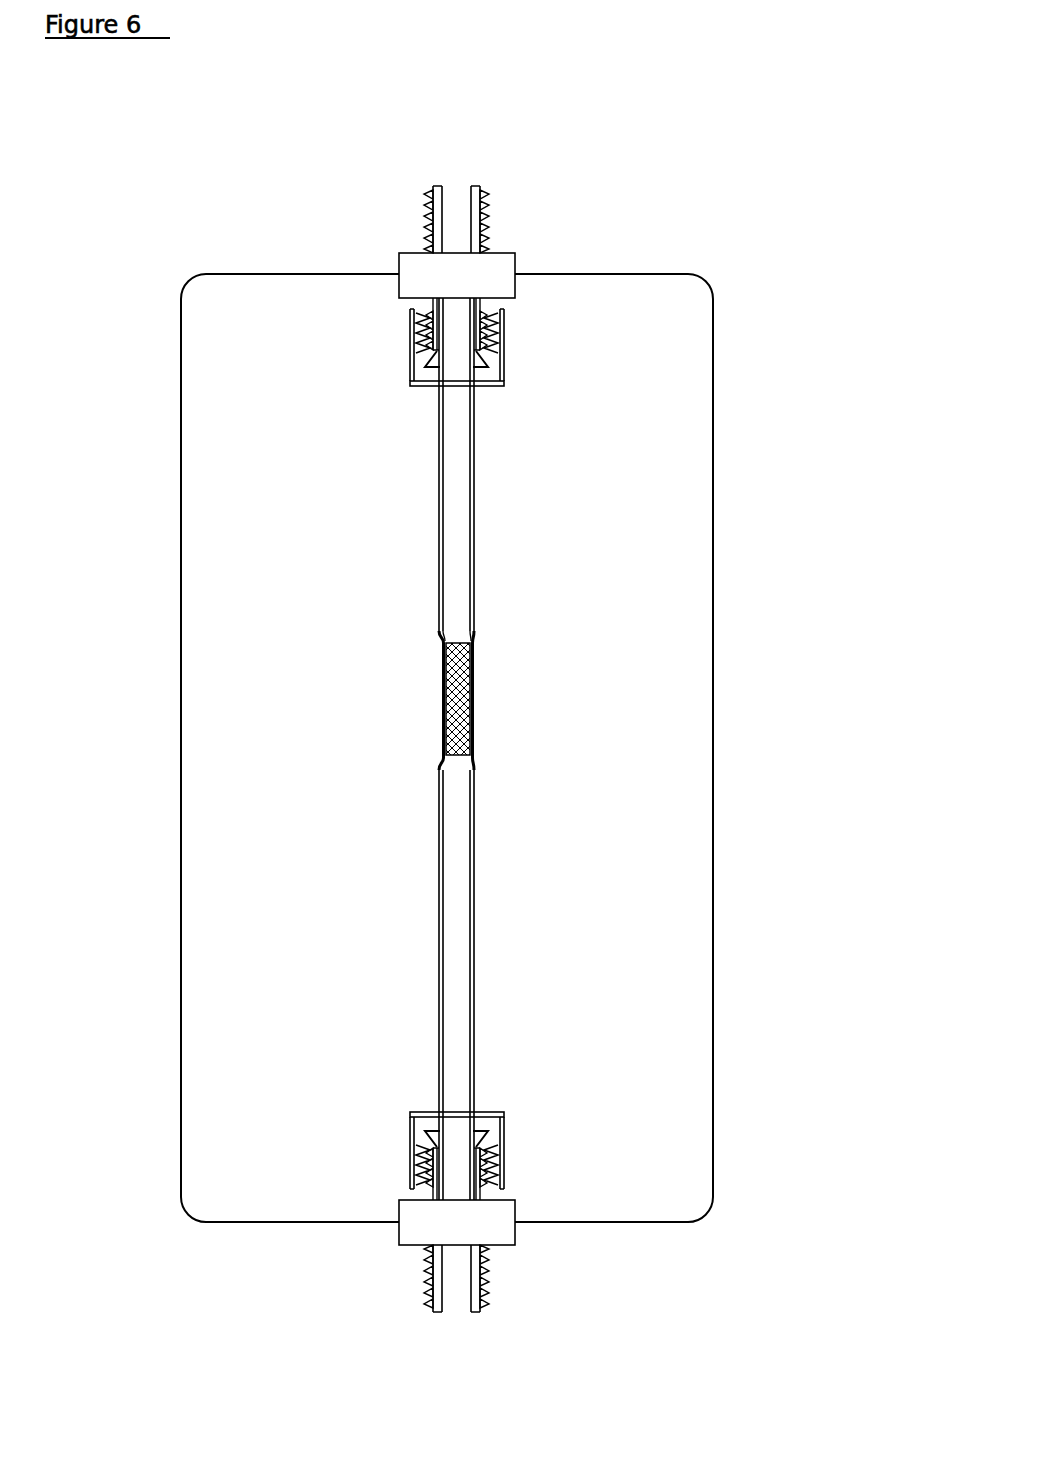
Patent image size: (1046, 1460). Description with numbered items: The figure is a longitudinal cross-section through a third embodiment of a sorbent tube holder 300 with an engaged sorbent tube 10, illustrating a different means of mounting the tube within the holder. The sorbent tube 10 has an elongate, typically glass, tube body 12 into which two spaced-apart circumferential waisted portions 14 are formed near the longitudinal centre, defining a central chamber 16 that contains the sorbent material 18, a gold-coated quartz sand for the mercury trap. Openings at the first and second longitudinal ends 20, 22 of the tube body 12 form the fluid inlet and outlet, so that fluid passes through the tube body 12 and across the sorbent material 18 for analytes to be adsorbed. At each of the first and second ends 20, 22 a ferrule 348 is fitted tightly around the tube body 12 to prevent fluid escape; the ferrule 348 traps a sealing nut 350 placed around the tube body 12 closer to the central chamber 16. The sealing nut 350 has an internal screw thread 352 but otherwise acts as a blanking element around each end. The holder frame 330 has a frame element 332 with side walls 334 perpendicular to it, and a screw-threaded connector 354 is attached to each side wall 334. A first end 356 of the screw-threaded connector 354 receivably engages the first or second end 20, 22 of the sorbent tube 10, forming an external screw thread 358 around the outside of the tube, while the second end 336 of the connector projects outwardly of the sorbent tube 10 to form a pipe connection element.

The sorbent tube holder 300 is at (125, 188).
The sorbent tube 10 is at (405, 598).
The tube body 12 is at (468, 913).
The waisted portions 14 is at (437, 632).
The central chamber 16 is at (476, 697).
The sorbent material 18 is at (465, 710).
The first longitudinal end 20 is at (428, 310).
The second longitudinal end 22 is at (463, 1188).
The holder frame 330 is at (730, 550).
The frame element 332 is at (683, 936).
The side walls 334 is at (515, 272).
The second end of screw-threaded connector 336 is at (483, 192).
The ferrule 348 is at (500, 375).
The sealing nut 350 is at (410, 373).
The internal screw thread 352 is at (420, 337).
The screw-threaded connector 354 is at (422, 270).
The first end of screw-threaded connector 356 is at (470, 347).
The external screw thread 358 is at (492, 325).